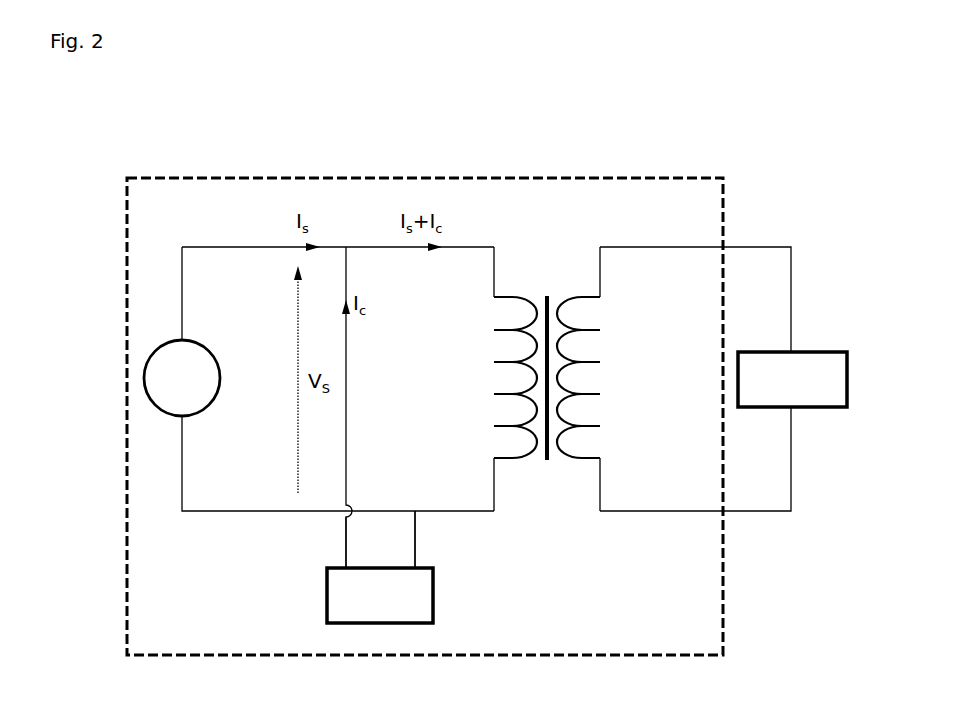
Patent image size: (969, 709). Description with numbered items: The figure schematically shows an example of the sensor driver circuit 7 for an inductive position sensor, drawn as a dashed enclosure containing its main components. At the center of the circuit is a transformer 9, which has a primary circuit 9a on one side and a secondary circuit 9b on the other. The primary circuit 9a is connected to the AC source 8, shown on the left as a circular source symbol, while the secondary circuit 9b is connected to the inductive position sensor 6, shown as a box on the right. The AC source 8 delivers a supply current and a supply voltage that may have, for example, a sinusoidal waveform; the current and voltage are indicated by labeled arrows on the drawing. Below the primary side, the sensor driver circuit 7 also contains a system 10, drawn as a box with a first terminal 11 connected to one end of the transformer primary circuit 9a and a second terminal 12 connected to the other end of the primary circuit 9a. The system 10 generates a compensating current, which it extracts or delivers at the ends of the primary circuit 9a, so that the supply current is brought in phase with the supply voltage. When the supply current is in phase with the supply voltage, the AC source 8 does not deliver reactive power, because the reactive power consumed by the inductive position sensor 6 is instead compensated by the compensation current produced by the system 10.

The inductive position sensor 6 is at (792, 379).
The sensor driver circuit 7 is at (426, 176).
The AC source 8 is at (182, 378).
The transformer 9 is at (546, 336).
The primary circuit 9a is at (490, 375).
The secondary circuit 9b is at (606, 375).
The system 10 is at (380, 595).
The first terminal 11 is at (343, 566).
The second terminal 12 is at (425, 566).